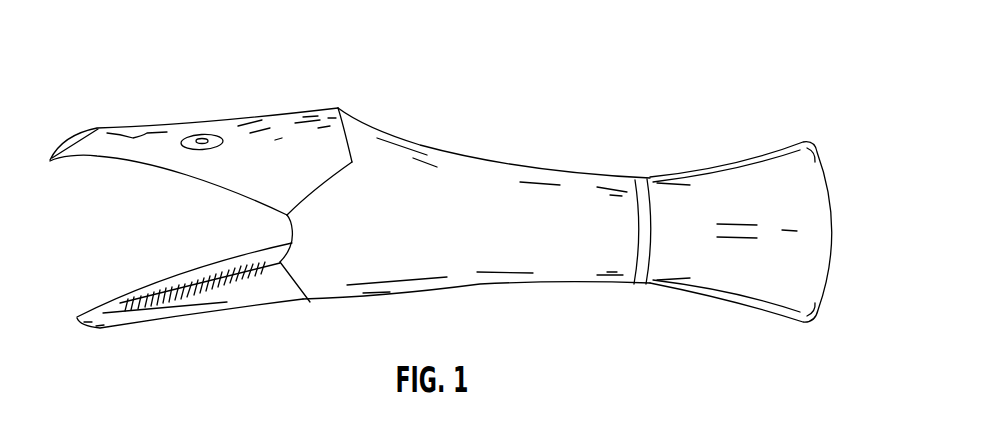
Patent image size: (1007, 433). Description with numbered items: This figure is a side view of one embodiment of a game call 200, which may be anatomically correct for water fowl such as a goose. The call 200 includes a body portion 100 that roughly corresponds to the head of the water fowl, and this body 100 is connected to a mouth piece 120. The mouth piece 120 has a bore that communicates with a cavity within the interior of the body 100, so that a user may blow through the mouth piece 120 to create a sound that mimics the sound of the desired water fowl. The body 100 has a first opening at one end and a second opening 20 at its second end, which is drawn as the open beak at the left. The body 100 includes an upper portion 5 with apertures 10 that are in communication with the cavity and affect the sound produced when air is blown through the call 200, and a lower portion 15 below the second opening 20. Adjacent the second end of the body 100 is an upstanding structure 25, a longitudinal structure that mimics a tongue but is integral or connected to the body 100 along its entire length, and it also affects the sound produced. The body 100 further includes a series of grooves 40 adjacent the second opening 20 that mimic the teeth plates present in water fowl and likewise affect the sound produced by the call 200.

The upper portion 5 is at (108, 105).
The apertures 10 is at (203, 138).
The lower portion 15 is at (122, 355).
The second opening 20 is at (133, 223).
The upstanding structure 25 is at (150, 283).
The grooves 40 is at (173, 313).
The body portion 100 is at (507, 180).
The mouth piece 120 is at (740, 287).
The game call 200 is at (672, 42).